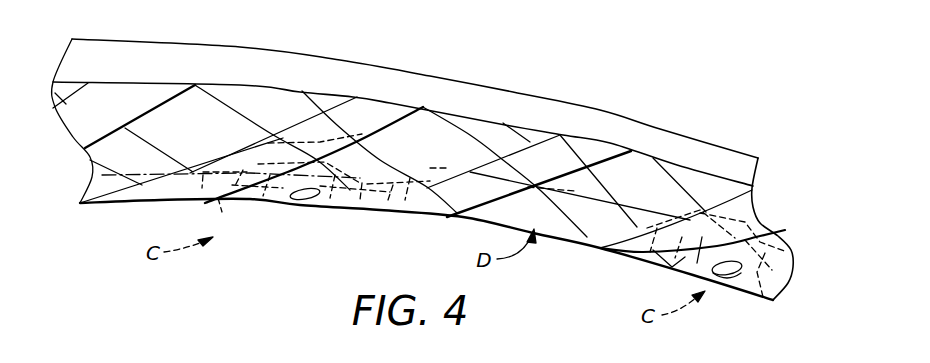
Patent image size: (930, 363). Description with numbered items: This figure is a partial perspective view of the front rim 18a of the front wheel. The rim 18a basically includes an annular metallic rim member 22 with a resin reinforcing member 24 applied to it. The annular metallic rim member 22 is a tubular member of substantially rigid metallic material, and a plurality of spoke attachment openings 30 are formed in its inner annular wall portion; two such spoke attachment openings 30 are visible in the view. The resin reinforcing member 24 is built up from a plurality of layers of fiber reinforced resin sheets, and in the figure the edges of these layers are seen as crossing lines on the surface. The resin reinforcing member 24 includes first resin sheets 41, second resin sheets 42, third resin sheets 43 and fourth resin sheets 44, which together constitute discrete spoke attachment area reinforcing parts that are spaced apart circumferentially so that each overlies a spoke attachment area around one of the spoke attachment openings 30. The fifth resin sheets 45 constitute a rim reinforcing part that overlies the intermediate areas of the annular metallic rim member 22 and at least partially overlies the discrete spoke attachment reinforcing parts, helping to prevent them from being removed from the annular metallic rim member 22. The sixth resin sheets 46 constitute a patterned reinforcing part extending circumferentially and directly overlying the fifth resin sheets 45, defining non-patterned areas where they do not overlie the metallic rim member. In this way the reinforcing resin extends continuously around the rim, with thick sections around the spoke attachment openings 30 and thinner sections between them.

The rim 18a is at (545, 36).
The annular metallic rim member 22 is at (498, 80).
The resin reinforcing member 24 is at (598, 140).
The spoke attachment openings 30 is at (299, 201).
The first resin sheets 41 is at (327, 162).
The second resin sheets 42 is at (377, 216).
The third resin sheets 43 is at (297, 158).
The fourth resin sheets 44 is at (270, 143).
The fifth resin sheets 45 is at (207, 130).
The sixth resin sheets 46 is at (127, 103).